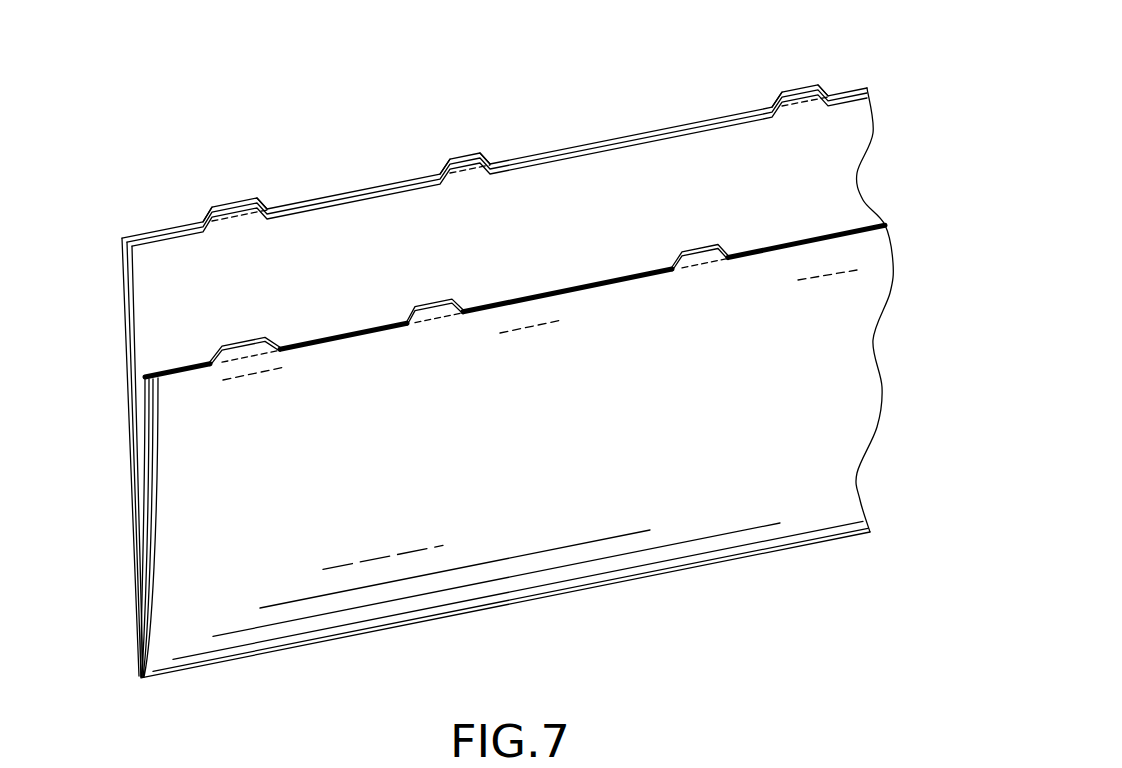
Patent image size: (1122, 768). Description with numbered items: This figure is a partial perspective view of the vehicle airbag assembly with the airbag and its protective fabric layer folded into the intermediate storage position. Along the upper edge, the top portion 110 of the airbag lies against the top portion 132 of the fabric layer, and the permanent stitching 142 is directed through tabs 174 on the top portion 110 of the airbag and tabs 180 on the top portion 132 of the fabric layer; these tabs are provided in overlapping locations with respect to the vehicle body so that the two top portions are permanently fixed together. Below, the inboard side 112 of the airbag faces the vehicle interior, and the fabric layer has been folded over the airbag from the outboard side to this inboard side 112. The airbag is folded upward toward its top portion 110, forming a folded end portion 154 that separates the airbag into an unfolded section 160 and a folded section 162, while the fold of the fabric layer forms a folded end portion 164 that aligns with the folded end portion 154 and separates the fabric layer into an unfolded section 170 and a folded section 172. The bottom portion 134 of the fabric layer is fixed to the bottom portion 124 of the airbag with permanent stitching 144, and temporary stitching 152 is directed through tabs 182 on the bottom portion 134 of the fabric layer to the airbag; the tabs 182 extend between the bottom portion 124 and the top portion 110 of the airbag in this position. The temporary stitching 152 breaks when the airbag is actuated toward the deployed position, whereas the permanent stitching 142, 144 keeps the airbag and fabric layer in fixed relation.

The top portion of the airbag 110 is at (178, 227).
The inboard side 112 is at (842, 173).
The bottom portion of the airbag 124 is at (143, 400).
The top portion of the fabric layer 132 is at (136, 236).
The bottom portion of the fabric layer 134 is at (140, 387).
The permanent stitching 142 is at (243, 200).
The permanent stitching 144 is at (258, 372).
The temporary stitching 152 is at (260, 347).
The folded end portion of the airbag 154 is at (143, 593).
The unfolded section of the airbag 160 is at (150, 333).
The folded section of the airbag 162 is at (150, 473).
The folded end portion of the fabric layer 164 is at (137, 678).
The unfolded section of the fabric layer 170 is at (122, 347).
The folded section of the fabric layer 172 is at (197, 538).
The tabs on the top portion of the airbag 174 is at (252, 220).
The tabs on the top portion of the fabric layer 180 is at (218, 200).
The tabs on the bottom portion of the fabric layer 182 is at (247, 337).